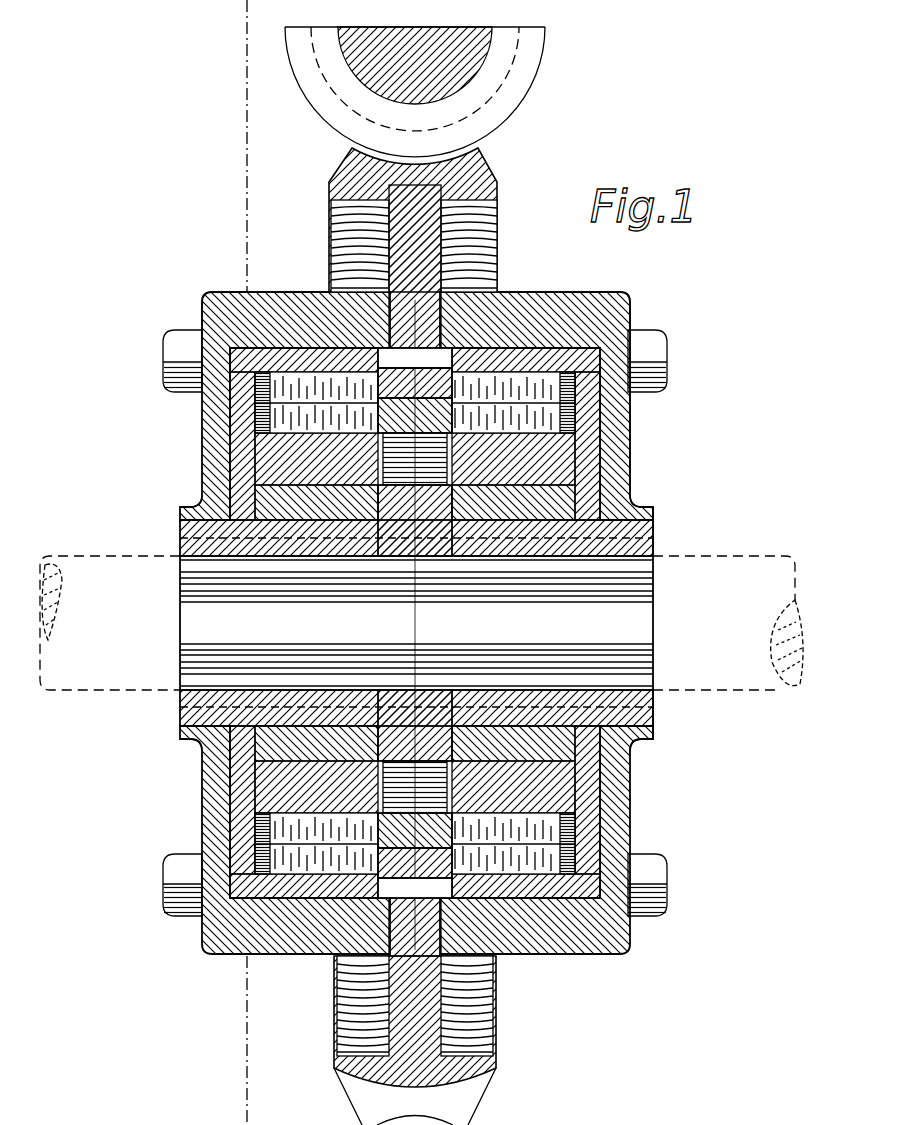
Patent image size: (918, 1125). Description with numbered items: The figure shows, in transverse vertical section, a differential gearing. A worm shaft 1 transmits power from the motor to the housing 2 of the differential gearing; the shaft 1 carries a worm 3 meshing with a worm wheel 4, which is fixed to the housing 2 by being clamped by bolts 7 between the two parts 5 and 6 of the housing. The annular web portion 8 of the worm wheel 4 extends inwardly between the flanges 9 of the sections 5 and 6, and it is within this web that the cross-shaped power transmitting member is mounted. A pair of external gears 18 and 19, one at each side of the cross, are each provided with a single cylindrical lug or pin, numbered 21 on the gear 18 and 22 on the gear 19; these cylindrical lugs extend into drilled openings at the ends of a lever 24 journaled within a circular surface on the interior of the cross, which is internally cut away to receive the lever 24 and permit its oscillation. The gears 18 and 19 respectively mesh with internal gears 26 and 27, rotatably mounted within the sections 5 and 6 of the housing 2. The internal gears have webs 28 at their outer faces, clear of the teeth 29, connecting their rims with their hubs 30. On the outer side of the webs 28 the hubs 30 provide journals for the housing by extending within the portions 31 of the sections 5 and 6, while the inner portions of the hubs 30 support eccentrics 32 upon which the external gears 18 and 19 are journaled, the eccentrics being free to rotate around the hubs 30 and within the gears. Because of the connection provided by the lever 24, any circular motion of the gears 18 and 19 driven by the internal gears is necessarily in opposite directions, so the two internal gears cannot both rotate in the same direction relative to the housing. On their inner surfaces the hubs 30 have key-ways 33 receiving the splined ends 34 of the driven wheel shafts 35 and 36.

The worm shaft 1 is at (468, 66).
The housing 2 is at (633, 302).
The worm 3 is at (299, 82).
The worm wheel 4 is at (492, 152).
The housing part 5 is at (216, 292).
The housing part 6 is at (632, 434).
The bolts 7 is at (668, 364).
The annular web portion 8 is at (498, 272).
The flanges 9 is at (277, 292).
The external gear 18 is at (295, 421).
The external gear 19 is at (456, 436).
The cylindrical lug 21 is at (468, 376).
The cylindrical lug 22 is at (462, 783).
The lever 24 is at (398, 572).
The internal gear 26 is at (262, 371).
The internal gear 27 is at (632, 337).
The webs 28 is at (256, 467).
The teeth 29 is at (297, 382).
The hubs 30 is at (185, 535).
The housing portions 31 is at (182, 510).
The eccentrics 32 is at (556, 498).
The key-ways 33 is at (654, 557).
The splined ends 34 is at (635, 582).
The driven wheel shaft 35 is at (130, 690).
The driven wheel shaft 36 is at (714, 688).